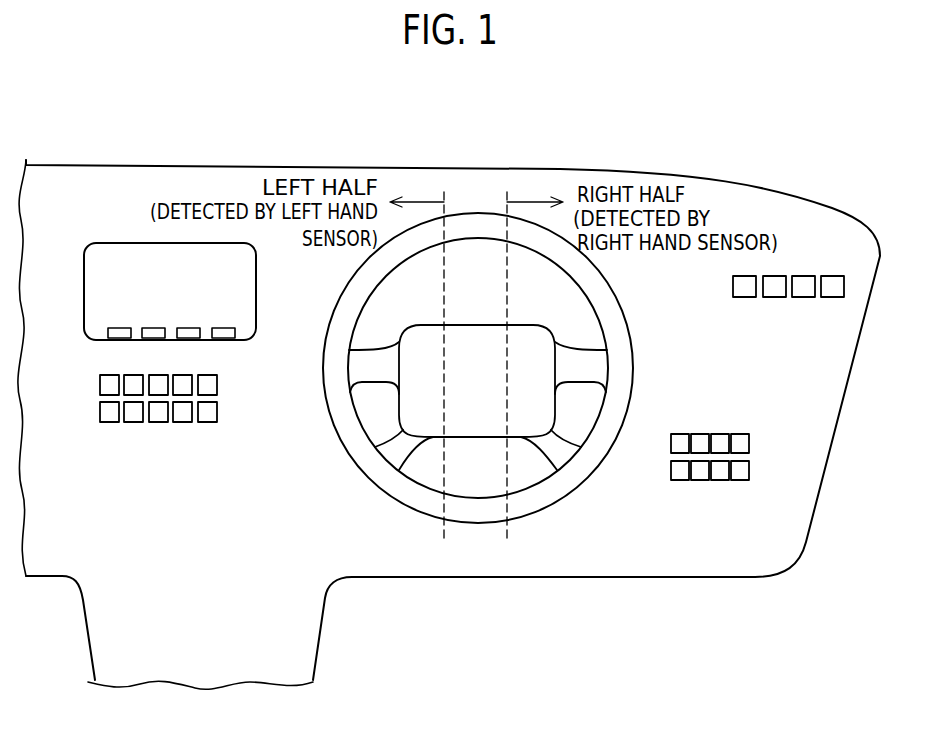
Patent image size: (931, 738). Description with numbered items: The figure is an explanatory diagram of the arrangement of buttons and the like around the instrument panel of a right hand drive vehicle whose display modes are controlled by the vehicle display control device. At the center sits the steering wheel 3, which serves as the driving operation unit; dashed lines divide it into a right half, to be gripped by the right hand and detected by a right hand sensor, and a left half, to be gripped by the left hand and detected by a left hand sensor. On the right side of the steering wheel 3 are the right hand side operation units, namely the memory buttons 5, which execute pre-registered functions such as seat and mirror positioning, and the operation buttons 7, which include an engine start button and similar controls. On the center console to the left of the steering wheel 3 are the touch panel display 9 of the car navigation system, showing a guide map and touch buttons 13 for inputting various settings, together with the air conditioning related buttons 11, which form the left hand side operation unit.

The steering wheel 3 is at (477, 222).
The memory buttons 5 is at (773, 312).
The operation buttons 7 is at (712, 420).
The touch panel display 9 is at (143, 243).
The air conditioning related buttons 11 is at (174, 434).
The touch buttons 13 is at (116, 328).